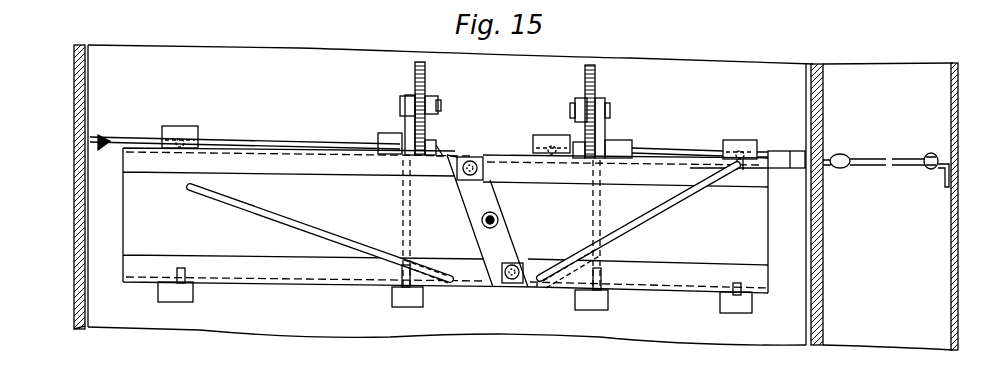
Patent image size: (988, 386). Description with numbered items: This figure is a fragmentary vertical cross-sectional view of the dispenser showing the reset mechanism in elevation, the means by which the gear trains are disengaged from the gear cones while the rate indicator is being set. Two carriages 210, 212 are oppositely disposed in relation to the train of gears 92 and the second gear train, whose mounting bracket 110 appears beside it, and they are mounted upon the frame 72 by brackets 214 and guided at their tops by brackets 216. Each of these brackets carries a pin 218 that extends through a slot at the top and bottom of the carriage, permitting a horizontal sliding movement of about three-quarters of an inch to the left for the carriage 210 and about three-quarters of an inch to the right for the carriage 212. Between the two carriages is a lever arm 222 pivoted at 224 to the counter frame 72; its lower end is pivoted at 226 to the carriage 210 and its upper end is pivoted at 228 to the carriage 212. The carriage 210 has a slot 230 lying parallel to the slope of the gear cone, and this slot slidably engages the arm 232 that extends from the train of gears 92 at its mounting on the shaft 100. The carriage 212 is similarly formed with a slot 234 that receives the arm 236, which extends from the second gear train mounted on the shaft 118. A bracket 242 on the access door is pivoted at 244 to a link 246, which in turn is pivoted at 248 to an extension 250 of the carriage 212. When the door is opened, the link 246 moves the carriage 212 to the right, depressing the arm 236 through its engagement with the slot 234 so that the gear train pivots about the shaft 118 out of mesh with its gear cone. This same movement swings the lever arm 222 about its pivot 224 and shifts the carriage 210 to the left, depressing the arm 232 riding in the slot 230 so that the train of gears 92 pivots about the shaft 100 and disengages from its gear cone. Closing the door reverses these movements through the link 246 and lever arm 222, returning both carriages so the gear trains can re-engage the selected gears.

The frame 72 is at (74, 211).
The train of gears 92 is at (402, 100).
The shaft 100 is at (262, 117).
The rack bracket 110 is at (608, 122).
The shaft 118 is at (674, 149).
The carriage 210 is at (292, 272).
The carriage 212 is at (659, 283).
The bracket 214 is at (182, 303).
The bracket 216 is at (181, 127).
The pin 218 is at (181, 268).
The lever arm 222 is at (511, 236).
The pivot 224 is at (498, 218).
The pivot 226 is at (515, 285).
The pivot 228 is at (471, 158).
The slot 230 is at (318, 228).
The arm 232 is at (402, 216).
The slot 234 is at (662, 216).
The arm 236 is at (592, 251).
The bracket 242 is at (941, 172).
The pivot 244 is at (931, 154).
The link 246 is at (881, 158).
The pivot 248 is at (846, 167).
The extension 250 is at (831, 170).